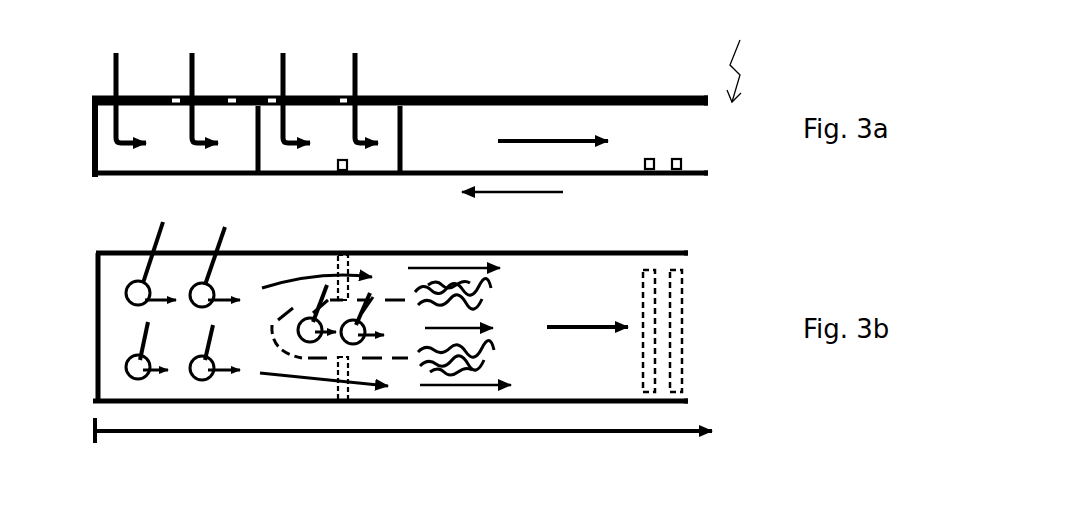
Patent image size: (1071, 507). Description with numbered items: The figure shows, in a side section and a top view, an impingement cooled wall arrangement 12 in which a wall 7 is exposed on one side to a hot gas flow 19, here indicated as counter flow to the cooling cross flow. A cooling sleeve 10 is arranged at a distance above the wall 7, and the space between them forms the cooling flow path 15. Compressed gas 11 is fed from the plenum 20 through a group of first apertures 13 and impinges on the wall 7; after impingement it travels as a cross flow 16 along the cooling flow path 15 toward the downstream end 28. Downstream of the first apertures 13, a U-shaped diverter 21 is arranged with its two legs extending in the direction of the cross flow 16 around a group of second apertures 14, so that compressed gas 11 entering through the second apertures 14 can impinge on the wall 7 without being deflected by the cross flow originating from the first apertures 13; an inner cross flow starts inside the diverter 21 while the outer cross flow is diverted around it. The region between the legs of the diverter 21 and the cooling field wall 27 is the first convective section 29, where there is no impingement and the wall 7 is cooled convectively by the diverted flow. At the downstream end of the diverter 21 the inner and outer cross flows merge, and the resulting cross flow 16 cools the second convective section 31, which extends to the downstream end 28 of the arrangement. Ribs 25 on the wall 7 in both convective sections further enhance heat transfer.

In FIG. 3a, the wall 7 is at (371, 172).
In FIG. 3a, the cooling sleeve 10 is at (550, 102).
In FIG. 3a, the compressed gas 11 is at (277, 78).
In FIG. 3b, the compressed gas 11 is at (250, 283).
In FIG. 3a, the impingement cooled wall arrangement 12 is at (750, 53).
In FIG. 3a, the first apertures 13 is at (118, 93).
In FIG. 3b, the first apertures 13 is at (152, 278).
In FIG. 3a, the second apertures 14 is at (273, 98).
In FIG. 3b, the second apertures 14 is at (302, 328).
In FIG. 3a, the cooling flow path 15 is at (655, 144).
In FIG. 3a, the cross flow 16 is at (535, 141).
In FIG. 3b, the cross flow 16 is at (518, 328).
In FIG. 3a, the hot gas flow 19 is at (527, 192).
In FIG. 3a, the plenum 20 is at (238, 44).
In FIG. 3a, the diverter 21 is at (405, 127).
In FIG. 3b, the diverter 21 is at (295, 352).
In FIG. 3a, the ribs 25 is at (343, 171).
In FIG. 3b, the ribs 25 is at (347, 278).
In FIG. 3a, the cooling field wall 27 is at (93, 148).
In FIG. 3a, the downstream end 28 is at (740, 220).
In FIG. 3b, the downstream end 28 is at (713, 333).
In FIG. 3b, the first convective section 29 is at (395, 282).
In FIG. 3b, the second convective section 31 is at (573, 372).